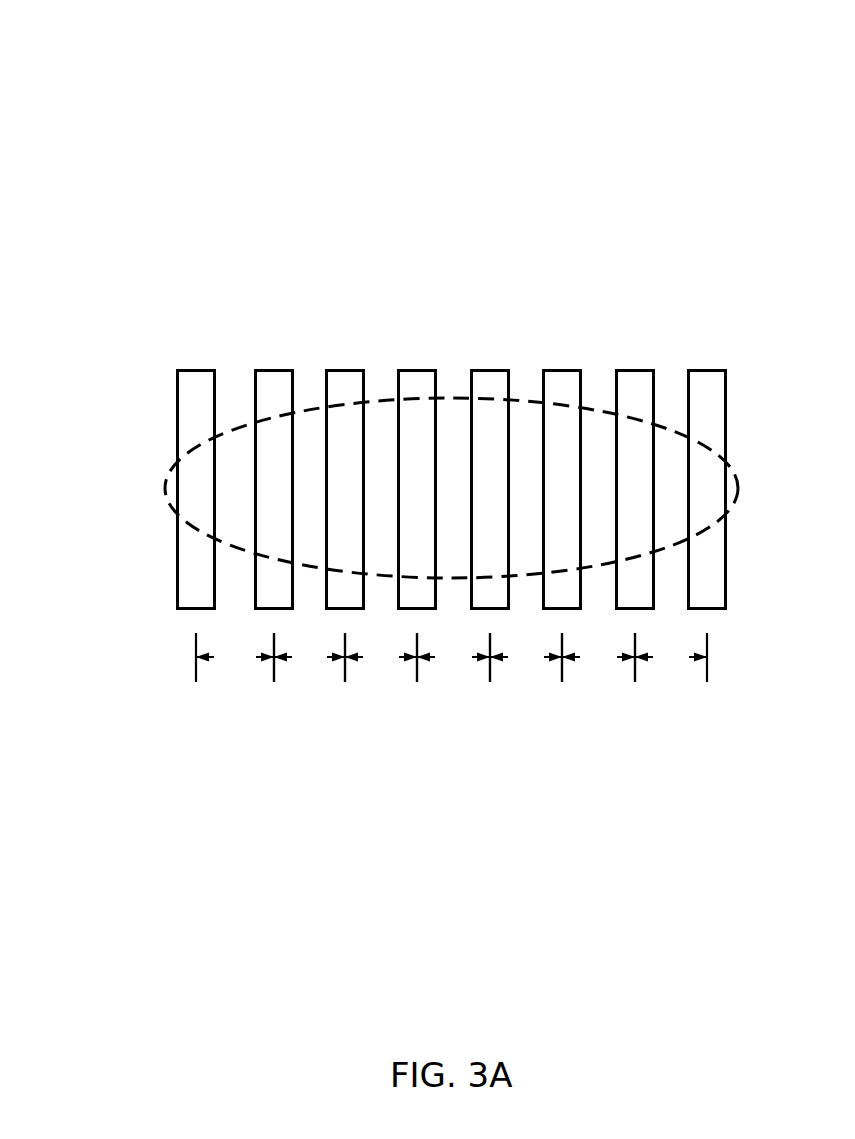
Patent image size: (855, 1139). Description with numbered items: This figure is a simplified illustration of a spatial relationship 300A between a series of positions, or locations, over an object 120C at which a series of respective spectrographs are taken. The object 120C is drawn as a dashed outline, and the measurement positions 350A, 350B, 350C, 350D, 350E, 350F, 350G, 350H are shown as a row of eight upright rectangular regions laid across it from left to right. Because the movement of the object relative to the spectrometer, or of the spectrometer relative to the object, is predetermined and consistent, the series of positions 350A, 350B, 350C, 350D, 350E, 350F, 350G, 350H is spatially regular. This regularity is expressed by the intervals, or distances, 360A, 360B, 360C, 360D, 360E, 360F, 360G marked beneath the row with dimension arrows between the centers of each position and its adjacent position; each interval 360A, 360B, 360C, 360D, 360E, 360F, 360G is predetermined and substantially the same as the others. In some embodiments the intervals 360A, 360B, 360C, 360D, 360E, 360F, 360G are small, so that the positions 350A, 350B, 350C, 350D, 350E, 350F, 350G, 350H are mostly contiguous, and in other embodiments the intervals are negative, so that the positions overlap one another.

The spatial relationship 300A is at (181, 57).
The object 120C is at (442, 398).
The position 350A is at (200, 490).
The position 350B is at (278, 490).
The position 350C is at (349, 490).
The position 350D is at (421, 490).
The position 350E is at (494, 490).
The position 350F is at (566, 490).
The position 350G is at (639, 490).
The position 350H is at (711, 490).
The interval 360A is at (244, 657).
The interval 360B is at (318, 657).
The interval 360C is at (390, 657).
The interval 360D is at (462, 657).
The interval 360E is at (535, 657).
The interval 360F is at (607, 657).
The interval 360G is at (671, 657).